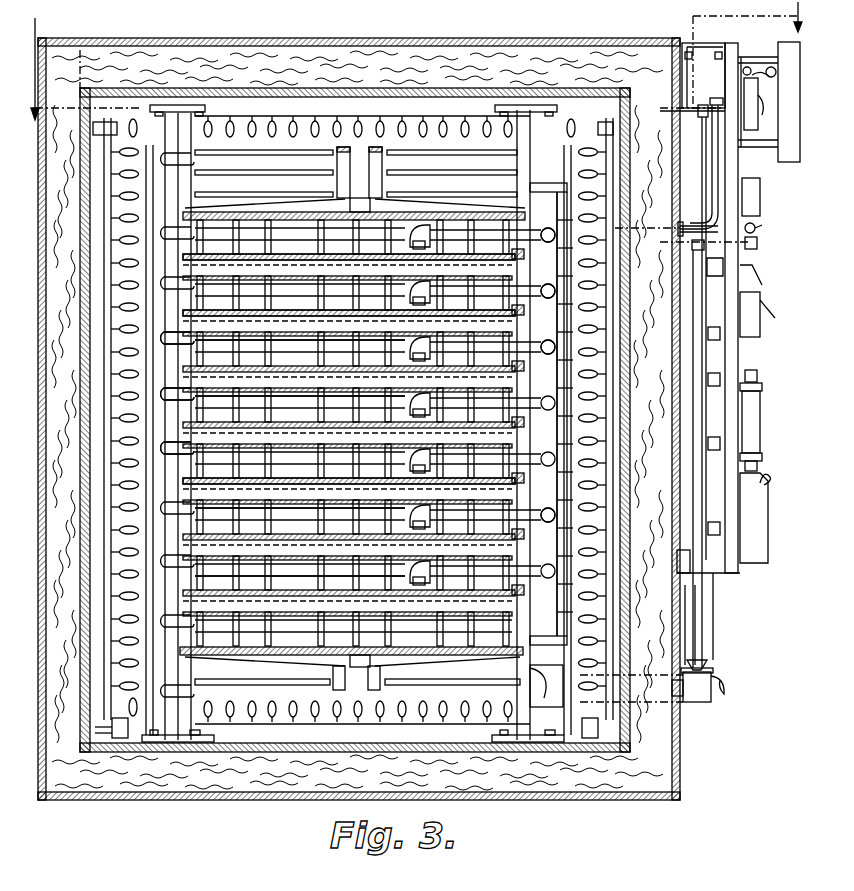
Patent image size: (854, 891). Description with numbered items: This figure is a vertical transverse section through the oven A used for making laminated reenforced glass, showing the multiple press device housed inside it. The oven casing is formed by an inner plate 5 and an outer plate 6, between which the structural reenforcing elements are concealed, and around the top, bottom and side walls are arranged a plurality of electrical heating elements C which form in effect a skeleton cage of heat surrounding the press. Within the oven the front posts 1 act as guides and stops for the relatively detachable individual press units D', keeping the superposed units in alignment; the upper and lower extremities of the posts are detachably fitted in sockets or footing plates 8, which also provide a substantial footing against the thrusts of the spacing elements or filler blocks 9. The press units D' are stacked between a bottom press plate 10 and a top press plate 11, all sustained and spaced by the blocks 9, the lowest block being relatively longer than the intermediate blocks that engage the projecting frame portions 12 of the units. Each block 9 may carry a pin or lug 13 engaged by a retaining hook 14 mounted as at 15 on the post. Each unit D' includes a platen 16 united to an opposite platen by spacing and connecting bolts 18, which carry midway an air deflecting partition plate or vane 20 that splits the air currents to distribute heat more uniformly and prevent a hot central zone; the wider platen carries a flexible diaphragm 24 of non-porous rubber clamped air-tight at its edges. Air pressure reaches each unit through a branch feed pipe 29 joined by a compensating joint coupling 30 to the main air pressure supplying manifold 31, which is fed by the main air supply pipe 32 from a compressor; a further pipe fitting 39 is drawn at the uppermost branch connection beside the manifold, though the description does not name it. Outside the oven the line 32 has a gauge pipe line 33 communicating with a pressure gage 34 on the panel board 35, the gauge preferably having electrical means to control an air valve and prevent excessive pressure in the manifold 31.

The front post 1 is at (174, 131).
The inner plate 5 is at (556, 806).
The outer plate 6 is at (340, 92).
The socket or footing plate 8 is at (190, 104).
The spacing element or filler block 9 is at (194, 190).
The bottom press plate 10 is at (308, 656).
The top press plate 11 is at (338, 212).
The projecting frame portion 12 is at (186, 255).
The pin or lug 13 is at (186, 341).
The retaining hook 14 is at (186, 397).
The hook mounting 15 is at (180, 451).
The platen 16 is at (318, 578).
The spacing and connecting bolt 18 is at (332, 520).
The air deflecting partition plate or vane 20 is at (332, 349).
The flexible diaphragm 24 is at (332, 408).
The branch feed pipe 29 is at (548, 355).
The compensating joint coupling 30 is at (548, 299).
The main air pressure supplying manifold 31 is at (547, 418).
The main air supply pipe 32 is at (722, 674).
The gauge pipe line 33 is at (700, 640).
The pressure gage 34 is at (750, 204).
The panel board 35 is at (736, 374).
The nozzle 39 is at (512, 292).
The oven A is at (234, 800).
The electrical heating element C is at (316, 134).
The individual press unit D' is at (349, 358).